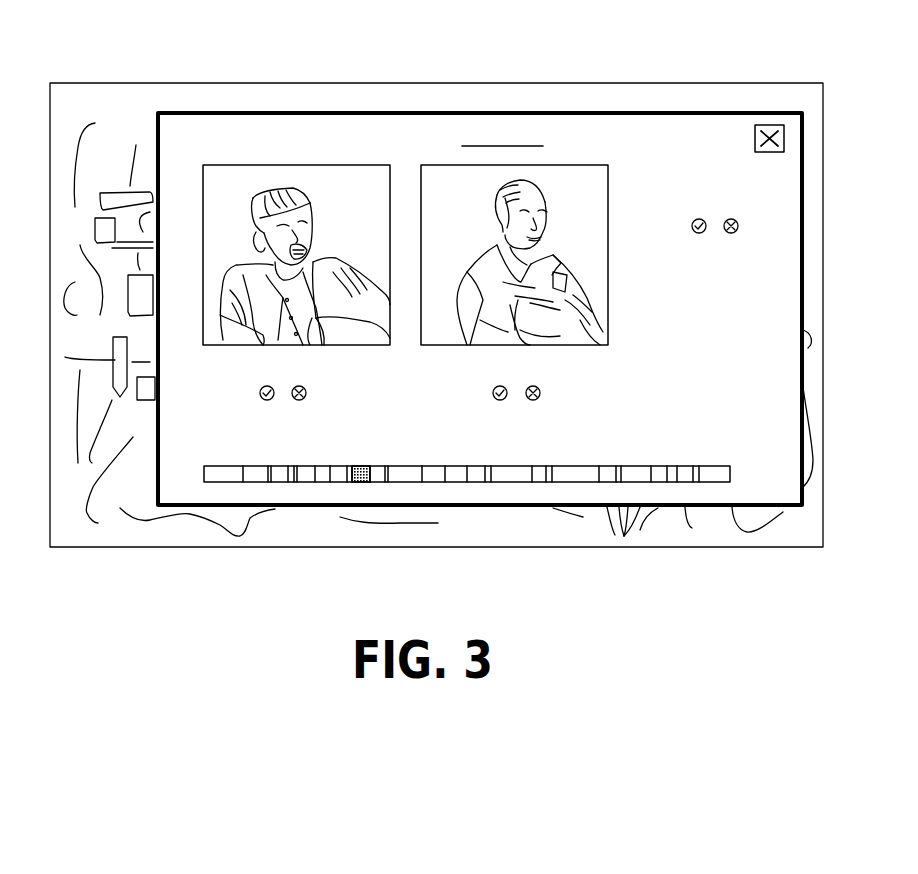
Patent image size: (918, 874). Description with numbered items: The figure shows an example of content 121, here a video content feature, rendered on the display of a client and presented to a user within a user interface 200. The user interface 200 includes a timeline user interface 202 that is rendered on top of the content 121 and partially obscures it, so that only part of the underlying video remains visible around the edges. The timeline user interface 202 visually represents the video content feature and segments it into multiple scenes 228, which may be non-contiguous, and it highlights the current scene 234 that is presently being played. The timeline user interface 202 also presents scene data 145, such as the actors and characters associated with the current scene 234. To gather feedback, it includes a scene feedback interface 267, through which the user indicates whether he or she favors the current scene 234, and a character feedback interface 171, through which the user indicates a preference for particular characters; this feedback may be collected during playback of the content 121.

The user interface 200 is at (719, 657).
The content 121 is at (113, 113).
The timeline user interface 202 is at (391, 145).
The scene feedback interface 267 is at (731, 175).
The scene data 145 is at (700, 352).
The character feedback interface 171 is at (478, 409).
The scenes 228 is at (507, 468).
The current scene 234 is at (360, 466).